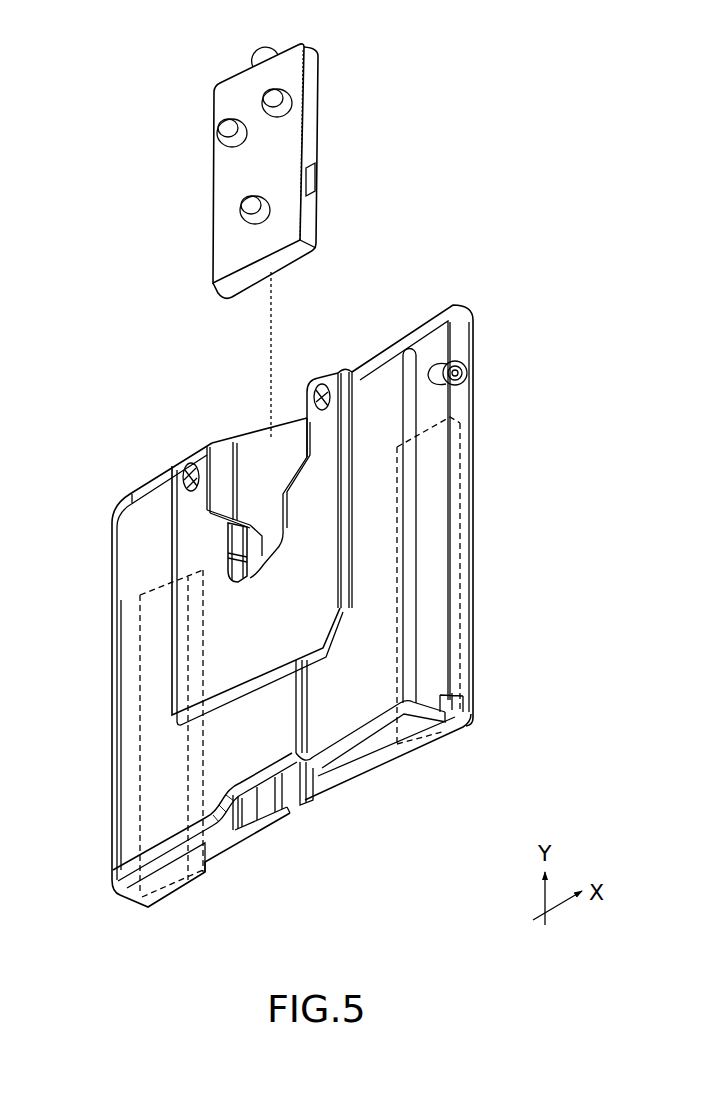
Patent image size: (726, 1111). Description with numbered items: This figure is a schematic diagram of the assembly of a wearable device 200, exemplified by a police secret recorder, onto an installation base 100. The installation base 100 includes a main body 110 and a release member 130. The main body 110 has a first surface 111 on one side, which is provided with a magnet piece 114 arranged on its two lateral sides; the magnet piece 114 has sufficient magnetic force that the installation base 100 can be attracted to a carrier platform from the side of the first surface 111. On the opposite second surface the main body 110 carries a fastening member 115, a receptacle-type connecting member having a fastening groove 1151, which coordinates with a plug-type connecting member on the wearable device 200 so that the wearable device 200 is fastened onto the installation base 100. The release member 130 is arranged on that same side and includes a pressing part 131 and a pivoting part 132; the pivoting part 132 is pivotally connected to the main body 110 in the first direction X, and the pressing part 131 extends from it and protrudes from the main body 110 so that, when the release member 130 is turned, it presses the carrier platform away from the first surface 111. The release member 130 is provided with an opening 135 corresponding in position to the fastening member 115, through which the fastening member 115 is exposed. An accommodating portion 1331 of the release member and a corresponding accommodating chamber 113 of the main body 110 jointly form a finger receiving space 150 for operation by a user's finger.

The installation base 100 is at (89, 421).
The main body 110 is at (188, 890).
The first surface 111 is at (443, 740).
The accommodating chamber 113 is at (262, 831).
The magnet piece 114 is at (148, 733).
The fastening member 115 is at (318, 378).
The fastening groove 1151 is at (256, 548).
The release member 130 is at (387, 422).
The pressing part 131 is at (158, 468).
The pivoting part 132 is at (473, 385).
The accommodating portion 1331 is at (240, 836).
The opening 135 is at (352, 382).
The finger receiving space 150 is at (293, 793).
The wearable device 200 is at (202, 80).